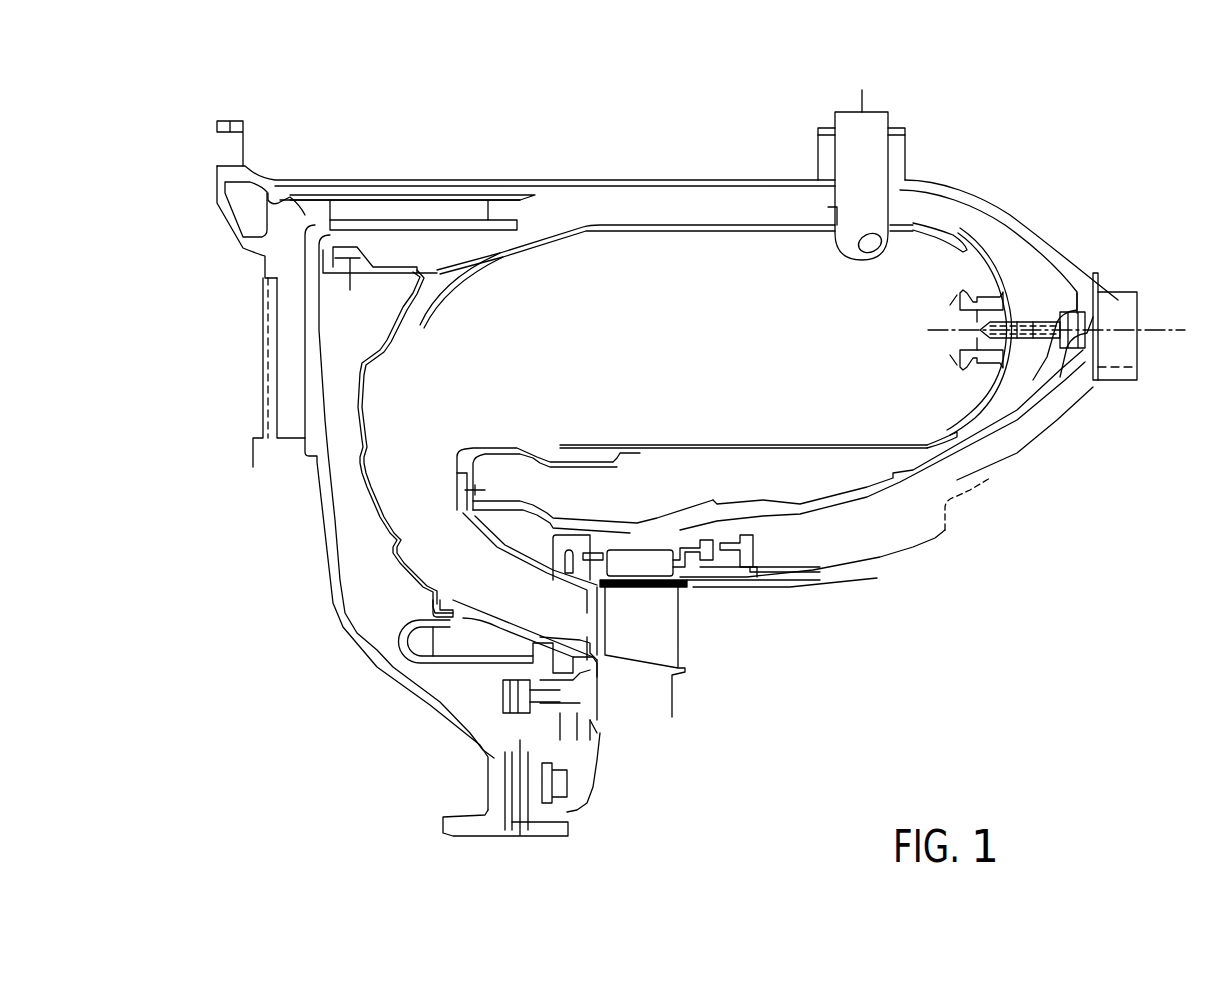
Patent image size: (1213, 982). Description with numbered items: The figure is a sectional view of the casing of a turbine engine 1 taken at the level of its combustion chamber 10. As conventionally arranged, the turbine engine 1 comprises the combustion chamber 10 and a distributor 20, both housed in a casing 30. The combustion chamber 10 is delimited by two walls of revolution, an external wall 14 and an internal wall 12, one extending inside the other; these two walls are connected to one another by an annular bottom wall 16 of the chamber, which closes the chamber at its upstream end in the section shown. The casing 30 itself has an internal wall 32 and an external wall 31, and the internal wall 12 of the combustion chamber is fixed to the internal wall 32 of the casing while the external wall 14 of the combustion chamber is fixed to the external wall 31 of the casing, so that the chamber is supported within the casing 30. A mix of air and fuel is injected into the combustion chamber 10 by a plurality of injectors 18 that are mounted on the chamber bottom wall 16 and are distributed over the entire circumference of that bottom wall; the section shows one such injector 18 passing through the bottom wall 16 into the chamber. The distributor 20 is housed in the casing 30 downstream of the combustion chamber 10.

The turbine engine 1 is at (1076, 172).
The combustion chamber 10 is at (718, 351).
The internal wall of revolution 12 is at (945, 440).
The external wall of revolution 14 is at (728, 226).
The annular bottom wall 16 is at (993, 392).
The injector 18 is at (1040, 320).
The distributor 20 is at (486, 628).
The casing 30 is at (613, 186).
The external wall of the casing 31 is at (497, 180).
The internal wall of the casing 32 is at (865, 497).